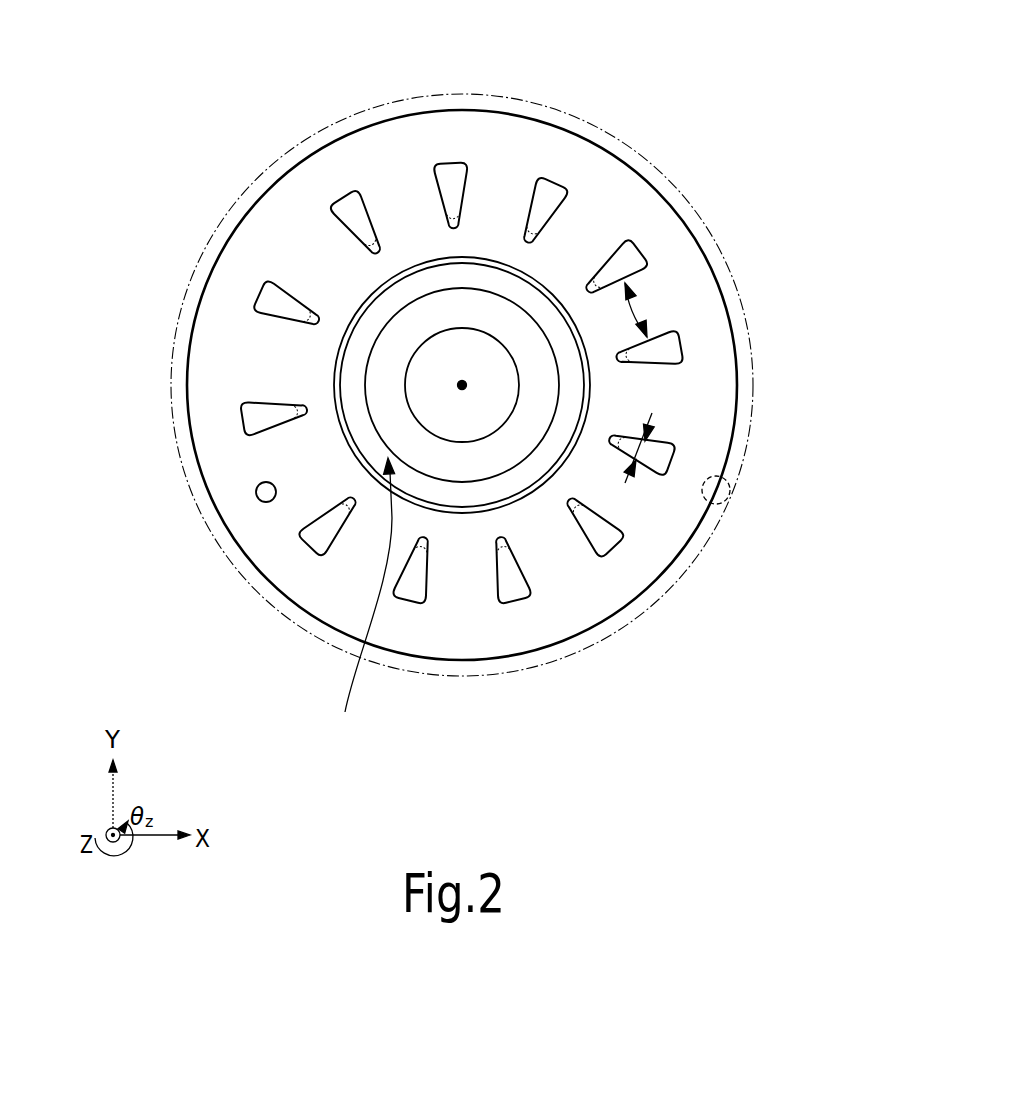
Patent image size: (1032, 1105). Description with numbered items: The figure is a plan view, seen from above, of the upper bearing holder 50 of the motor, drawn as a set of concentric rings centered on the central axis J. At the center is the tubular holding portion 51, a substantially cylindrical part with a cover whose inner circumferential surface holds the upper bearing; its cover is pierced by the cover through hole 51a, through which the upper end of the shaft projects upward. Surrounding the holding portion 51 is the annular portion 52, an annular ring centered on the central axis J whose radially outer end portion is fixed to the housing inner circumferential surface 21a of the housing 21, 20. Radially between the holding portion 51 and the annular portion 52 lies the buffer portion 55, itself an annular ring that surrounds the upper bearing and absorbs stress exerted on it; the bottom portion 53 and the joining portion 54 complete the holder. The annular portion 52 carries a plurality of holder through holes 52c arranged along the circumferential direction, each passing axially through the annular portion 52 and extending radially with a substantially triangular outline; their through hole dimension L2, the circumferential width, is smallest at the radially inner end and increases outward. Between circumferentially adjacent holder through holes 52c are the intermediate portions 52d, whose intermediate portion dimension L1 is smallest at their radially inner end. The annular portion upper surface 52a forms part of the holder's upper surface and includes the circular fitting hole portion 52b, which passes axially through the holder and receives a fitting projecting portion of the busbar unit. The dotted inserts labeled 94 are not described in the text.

The housing 20 is at (525, 385).
The housing 21 is at (753, 342).
The housing inner circumferential surface 21a is at (724, 505).
The upper bearing holder 50 is at (474, 353).
The holding portion 51 is at (424, 308).
The cover through hole 51a is at (437, 437).
The annular portion 52 is at (302, 216).
The annular portion upper surface 52a is at (267, 256).
The fitting hole portion 52b is at (276, 500).
The holder through hole 52c is at (633, 243).
The intermediate portion 52d is at (580, 225).
The bottom portion 53 is at (503, 282).
The joining portion 54 is at (592, 388).
The buffer portion 55 is at (363, 600).
The magnet 94 is at (453, 232).
The central axis J is at (470, 385).
The intermediate portion dimension L1 is at (634, 305).
The through hole dimension L2 is at (670, 452).